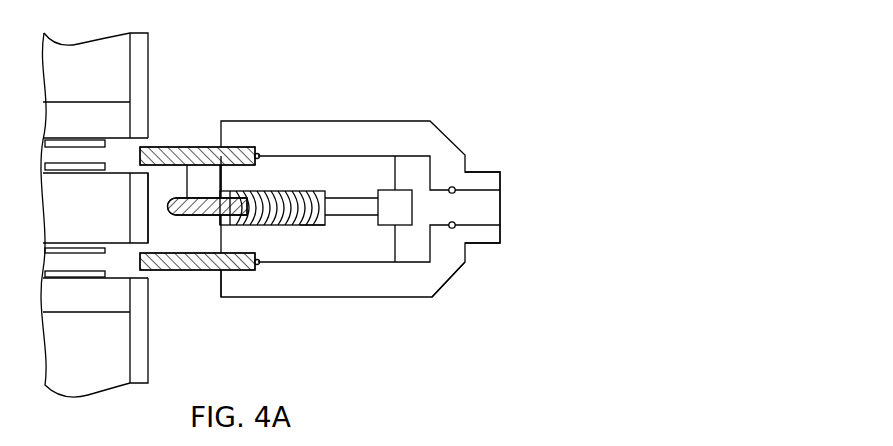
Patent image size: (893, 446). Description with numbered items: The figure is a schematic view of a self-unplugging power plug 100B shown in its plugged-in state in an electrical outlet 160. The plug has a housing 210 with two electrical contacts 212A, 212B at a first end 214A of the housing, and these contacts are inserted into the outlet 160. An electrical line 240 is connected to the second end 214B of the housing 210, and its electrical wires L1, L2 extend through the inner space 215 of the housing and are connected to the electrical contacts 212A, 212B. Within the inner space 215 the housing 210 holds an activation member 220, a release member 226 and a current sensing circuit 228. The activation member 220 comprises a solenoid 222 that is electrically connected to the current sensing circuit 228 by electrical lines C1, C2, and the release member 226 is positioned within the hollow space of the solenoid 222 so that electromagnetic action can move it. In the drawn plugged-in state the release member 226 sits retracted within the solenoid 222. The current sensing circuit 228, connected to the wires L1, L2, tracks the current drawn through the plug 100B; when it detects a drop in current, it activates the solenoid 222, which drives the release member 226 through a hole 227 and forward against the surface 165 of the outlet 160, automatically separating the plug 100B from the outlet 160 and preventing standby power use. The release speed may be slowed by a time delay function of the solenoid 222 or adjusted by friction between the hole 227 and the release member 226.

The power plug 100B is at (470, 96).
The electrical outlet 160 is at (150, 58).
The surface 165 is at (158, 228).
The housing 210 is at (344, 120).
The electrical contact 212A is at (160, 147).
The electrical contact 212B is at (163, 272).
The first end 214A is at (225, 314).
The second end 214B is at (477, 289).
The inner space 215 is at (267, 179).
The activation member 220 is at (318, 231).
The solenoid 222 is at (284, 190).
The release member 226 is at (188, 197).
The hole 227 is at (226, 232).
The current sensing circuit 228 is at (401, 226).
The electrical line 240 is at (484, 244).
The electrical line C1 is at (370, 198).
The electrical line C2 is at (352, 216).
The electrical wire L1 is at (477, 190).
The electrical wire L2 is at (478, 225).